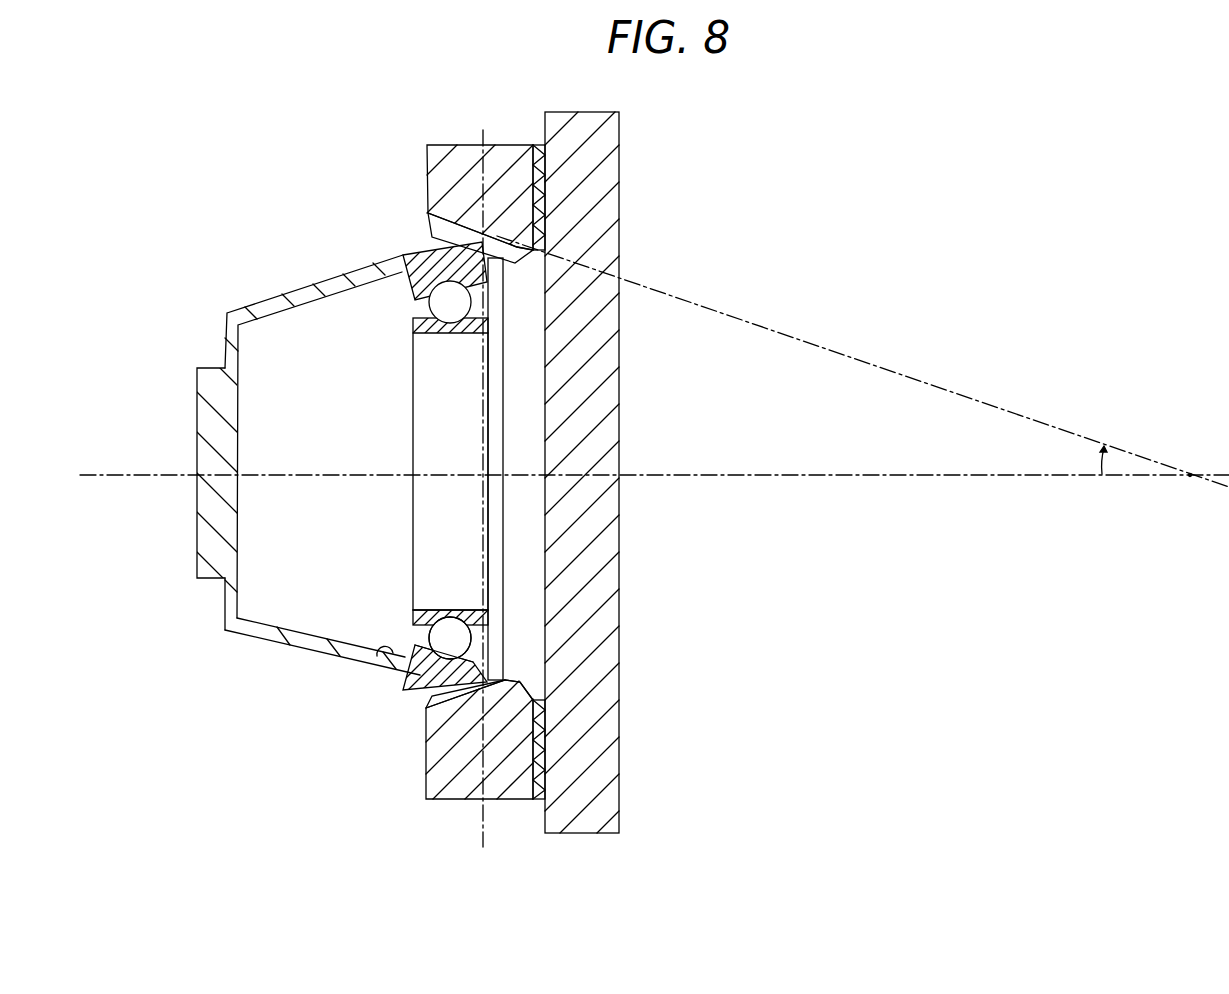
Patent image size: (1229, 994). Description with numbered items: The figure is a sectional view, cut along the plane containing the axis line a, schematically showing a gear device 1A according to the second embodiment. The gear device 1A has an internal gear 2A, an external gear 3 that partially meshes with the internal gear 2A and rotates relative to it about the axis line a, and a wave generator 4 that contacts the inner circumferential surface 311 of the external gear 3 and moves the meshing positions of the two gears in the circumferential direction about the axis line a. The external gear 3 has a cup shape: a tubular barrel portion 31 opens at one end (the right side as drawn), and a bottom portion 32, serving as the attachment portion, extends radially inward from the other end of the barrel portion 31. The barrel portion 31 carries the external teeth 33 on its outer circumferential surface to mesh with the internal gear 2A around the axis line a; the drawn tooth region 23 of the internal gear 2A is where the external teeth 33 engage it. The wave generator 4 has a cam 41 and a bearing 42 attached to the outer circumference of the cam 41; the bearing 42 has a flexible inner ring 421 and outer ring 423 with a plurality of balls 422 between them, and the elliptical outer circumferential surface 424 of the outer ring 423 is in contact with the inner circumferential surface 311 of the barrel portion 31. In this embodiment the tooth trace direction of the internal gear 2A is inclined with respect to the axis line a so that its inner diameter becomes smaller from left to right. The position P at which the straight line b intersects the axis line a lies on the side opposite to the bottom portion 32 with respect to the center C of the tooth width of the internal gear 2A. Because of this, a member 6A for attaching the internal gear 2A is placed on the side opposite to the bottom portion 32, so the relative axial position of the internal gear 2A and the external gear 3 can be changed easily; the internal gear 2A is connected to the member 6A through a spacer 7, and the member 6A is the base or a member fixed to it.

The gear device 1A is at (855, 166).
The internal gear 2A is at (453, 139).
The member 6A is at (632, 130).
The external gear 3 is at (330, 471).
The seat surface 23 is at (432, 230).
The barrel portion 31 is at (296, 661).
The inner circumferential surface 311 is at (376, 657).
The bottom portion 32 is at (197, 554).
The external teeth 33 is at (410, 262).
The wave generator 4 is at (496, 436).
The cam 41 is at (472, 388).
The bearing 42 is at (575, 495).
The inner ring 421 is at (485, 620).
The balls 422 is at (485, 643).
The outer ring 423 is at (483, 665).
The outer circumferential surface 424 is at (520, 706).
The spacer 7 is at (540, 800).
The center of the tooth width C is at (480, 820).
The axis line a is at (1052, 478).
The straight line b is at (1028, 416).
The position P is at (1190, 478).